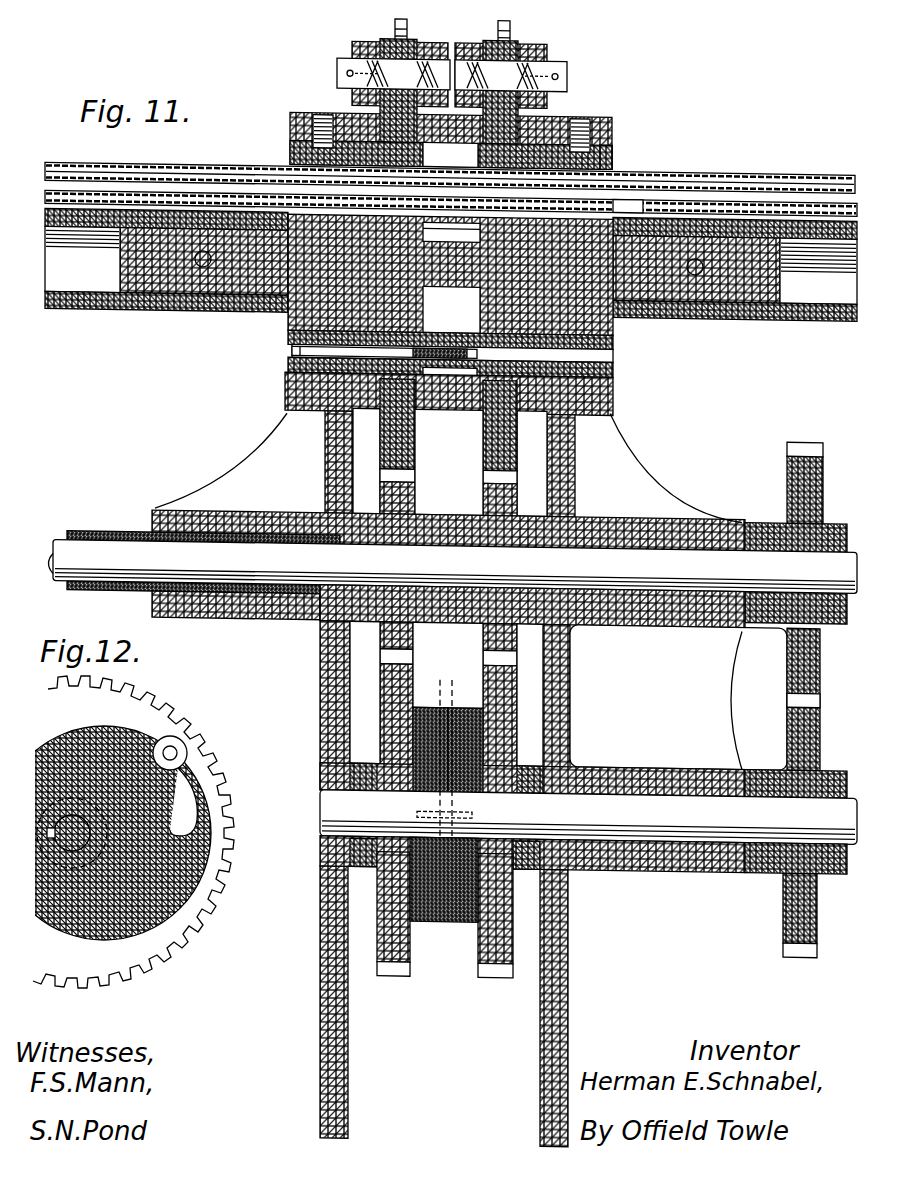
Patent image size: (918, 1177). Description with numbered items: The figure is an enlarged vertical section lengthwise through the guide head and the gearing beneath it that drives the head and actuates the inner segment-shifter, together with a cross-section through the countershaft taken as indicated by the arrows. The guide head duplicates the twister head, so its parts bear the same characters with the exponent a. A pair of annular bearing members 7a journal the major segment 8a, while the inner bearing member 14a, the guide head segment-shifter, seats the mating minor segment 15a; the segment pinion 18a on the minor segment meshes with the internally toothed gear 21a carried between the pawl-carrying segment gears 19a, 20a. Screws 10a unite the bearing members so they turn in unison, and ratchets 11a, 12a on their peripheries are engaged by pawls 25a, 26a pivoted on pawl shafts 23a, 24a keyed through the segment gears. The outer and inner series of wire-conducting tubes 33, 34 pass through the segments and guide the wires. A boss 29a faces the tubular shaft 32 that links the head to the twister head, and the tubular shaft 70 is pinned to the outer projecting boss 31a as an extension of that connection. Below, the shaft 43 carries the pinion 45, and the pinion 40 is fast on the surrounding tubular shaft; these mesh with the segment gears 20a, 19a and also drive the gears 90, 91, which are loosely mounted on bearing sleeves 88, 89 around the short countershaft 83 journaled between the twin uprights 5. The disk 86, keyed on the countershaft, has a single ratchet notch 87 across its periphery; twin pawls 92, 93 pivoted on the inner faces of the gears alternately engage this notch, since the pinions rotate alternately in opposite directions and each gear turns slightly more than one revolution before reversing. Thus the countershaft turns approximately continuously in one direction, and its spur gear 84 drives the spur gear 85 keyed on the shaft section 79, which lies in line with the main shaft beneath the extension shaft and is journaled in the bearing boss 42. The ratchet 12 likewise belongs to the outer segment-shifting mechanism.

In FIG. 11, the pawl 25a is at (352, 52).
In FIG. 11, the pawl 26a is at (548, 56).
In FIG. 11, the pawl shaft 23a is at (337, 72).
In FIG. 11, the pawl shaft 24a is at (568, 72).
In FIG. 11, the internally toothed gear 21a is at (405, 122).
In FIG. 11, the annular bearing member 7a is at (290, 150).
In FIG. 11, the wire-conducting tubes 33 is at (235, 172).
In FIG. 11, the wire-conducting tubes 34 is at (162, 195).
In FIG. 11, the major segment 8a is at (614, 185).
In FIG. 11, the minor segment 15a is at (632, 200).
In FIG. 11, the projecting boss 29a is at (220, 295).
In FIG. 11, the tubular shaft 32 is at (162, 312).
In FIG. 11, the outer projecting boss 31a is at (690, 300).
In FIG. 11, the tubular shaft 70 is at (810, 320).
In FIG. 11, the segment pinion 18a is at (455, 230).
In FIG. 11, the inner bearing member 14a is at (300, 340).
In FIG. 11, the screw 10a is at (296, 364).
In FIG. 11, the ratchet 11a is at (365, 460).
In FIG. 11, the ratchet 12a is at (533, 464).
In FIG. 11, the segment gear 19a is at (405, 445).
In FIG. 11, the segment gear 20a is at (490, 456).
In FIG. 11, the spur pinion 40 is at (405, 500).
In FIG. 11, the spur pinion 45 is at (510, 500).
In FIG. 11, the bearing boss 42 is at (678, 522).
In FIG. 11, the shaft section 79 is at (722, 565).
In FIG. 11, the spur gear 85 is at (790, 450).
In FIG. 11, the shaft 43 is at (132, 560).
In FIG. 11, the twin uprights 5 is at (328, 928).
In FIG. 11, the gear 90 is at (365, 692).
In FIG. 12, the gear 90 is at (170, 704).
In FIG. 11, the gear 91 is at (531, 695).
In FIG. 11, the ratchet 12 is at (438, 684).
In FIG. 11, the spur gear 84 is at (787, 905).
In FIG. 11, the bearing sleeve 88 is at (363, 797).
In FIG. 11, the bearing sleeve 89 is at (529, 802).
In FIG. 11, the pawl 92 is at (412, 725).
In FIG. 12, the pawl 92 is at (187, 777).
In FIG. 11, the pawl 93 is at (480, 730).
In FIG. 11, the countershaft 83 is at (650, 808).
In FIG. 12, the countershaft 83 is at (117, 893).
In FIG. 11, the disk 86 is at (465, 915).
In FIG. 12, the disk 86 is at (147, 890).
In FIG. 12, the ratchet notch 87 is at (168, 853).